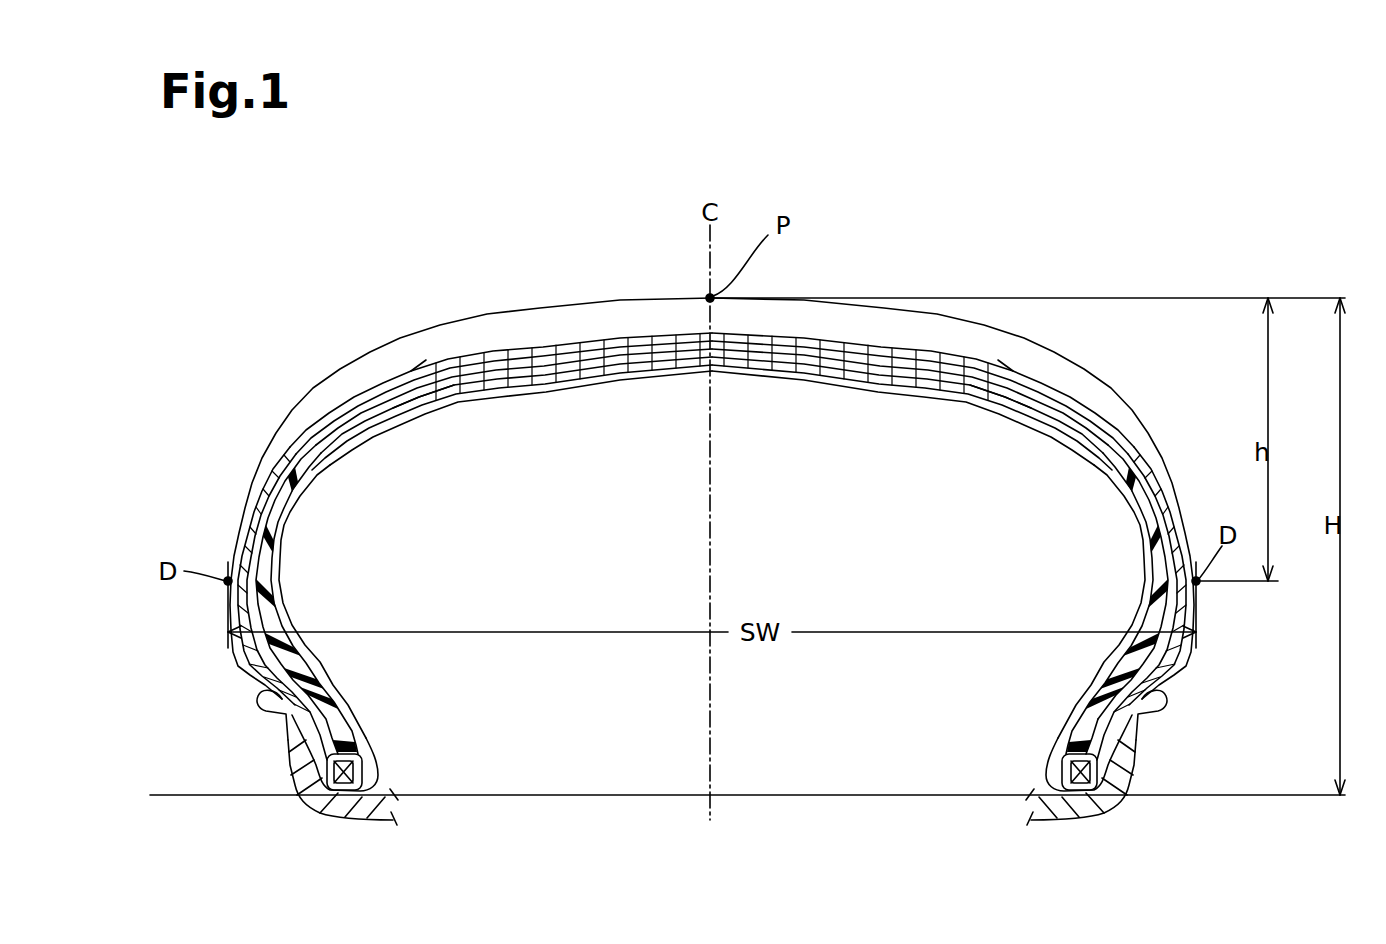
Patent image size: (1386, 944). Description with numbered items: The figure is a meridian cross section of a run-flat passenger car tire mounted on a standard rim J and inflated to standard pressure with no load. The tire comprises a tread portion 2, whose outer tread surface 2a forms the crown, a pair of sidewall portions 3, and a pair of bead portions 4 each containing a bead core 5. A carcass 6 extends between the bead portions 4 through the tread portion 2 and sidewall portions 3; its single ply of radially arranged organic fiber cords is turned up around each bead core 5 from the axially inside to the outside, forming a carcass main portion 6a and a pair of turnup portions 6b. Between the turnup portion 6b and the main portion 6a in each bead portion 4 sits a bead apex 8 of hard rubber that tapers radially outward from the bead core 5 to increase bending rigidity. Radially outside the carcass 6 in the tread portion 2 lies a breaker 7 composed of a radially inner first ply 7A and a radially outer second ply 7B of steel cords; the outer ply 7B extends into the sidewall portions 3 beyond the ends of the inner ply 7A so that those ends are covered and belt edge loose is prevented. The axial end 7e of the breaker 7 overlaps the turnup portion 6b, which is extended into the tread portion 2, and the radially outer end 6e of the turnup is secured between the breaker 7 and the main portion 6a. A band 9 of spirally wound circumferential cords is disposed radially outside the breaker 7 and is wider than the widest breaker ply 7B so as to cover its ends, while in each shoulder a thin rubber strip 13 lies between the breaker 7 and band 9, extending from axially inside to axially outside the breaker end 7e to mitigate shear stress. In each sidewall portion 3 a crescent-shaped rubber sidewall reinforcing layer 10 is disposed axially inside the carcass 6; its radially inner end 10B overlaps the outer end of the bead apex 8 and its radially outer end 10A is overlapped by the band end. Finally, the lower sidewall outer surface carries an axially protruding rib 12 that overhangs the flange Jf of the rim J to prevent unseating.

The tread portion 2 is at (840, 289).
The tread surface 2a is at (1006, 331).
The sidewall portion 3 is at (222, 540).
The bead portion 4 is at (253, 683).
The bead core 5 is at (356, 770).
The carcass 6 is at (1050, 546).
The carcass main portion 6a is at (1150, 550).
The carcass ply turnup portion 6b is at (1152, 590).
The radially outer end of turnup portion 6e is at (440, 400).
The breaker 7 is at (905, 460).
The radially inner first breaker ply 7A is at (807, 352).
The radially outer second breaker ply 7B is at (881, 352).
The axial end of breaker 7e is at (1088, 426).
The bead apex 8 is at (1054, 740).
The band 9 is at (603, 334).
The sidewall reinforcing layer 10 is at (272, 532).
The radially outer end of sidewall reinforcing layer 10A is at (1112, 447).
The radially inner end of sidewall reinforcing layer 10B is at (1072, 710).
The axially protruding rib 12 is at (1204, 666).
The rubber strip 13 is at (420, 368).
The standard rim J is at (1080, 810).
The flange Jf is at (1147, 751).